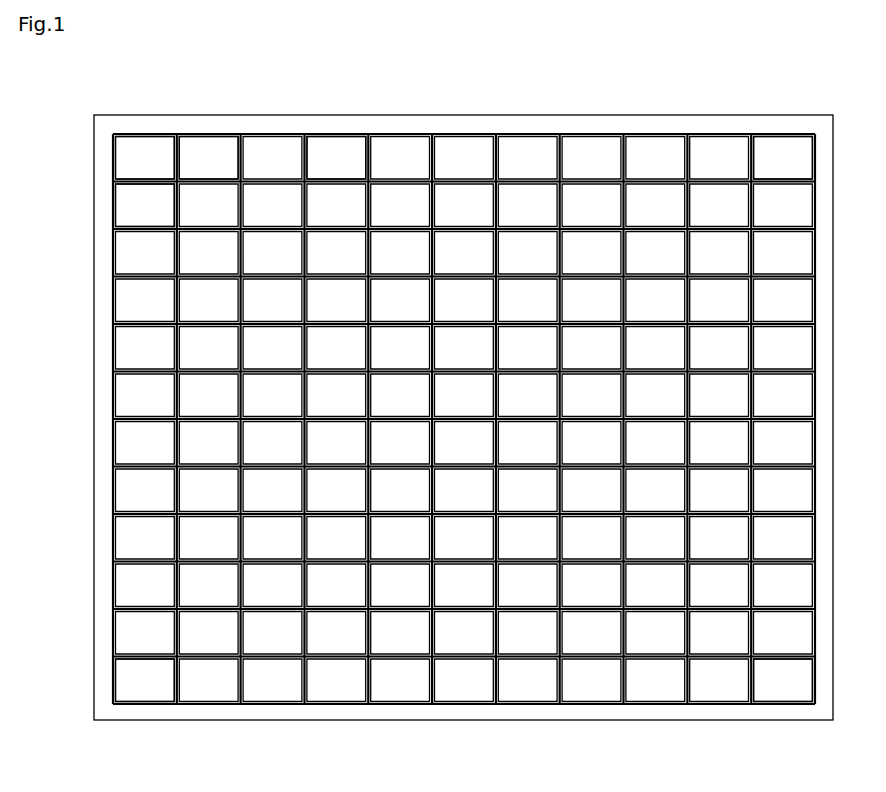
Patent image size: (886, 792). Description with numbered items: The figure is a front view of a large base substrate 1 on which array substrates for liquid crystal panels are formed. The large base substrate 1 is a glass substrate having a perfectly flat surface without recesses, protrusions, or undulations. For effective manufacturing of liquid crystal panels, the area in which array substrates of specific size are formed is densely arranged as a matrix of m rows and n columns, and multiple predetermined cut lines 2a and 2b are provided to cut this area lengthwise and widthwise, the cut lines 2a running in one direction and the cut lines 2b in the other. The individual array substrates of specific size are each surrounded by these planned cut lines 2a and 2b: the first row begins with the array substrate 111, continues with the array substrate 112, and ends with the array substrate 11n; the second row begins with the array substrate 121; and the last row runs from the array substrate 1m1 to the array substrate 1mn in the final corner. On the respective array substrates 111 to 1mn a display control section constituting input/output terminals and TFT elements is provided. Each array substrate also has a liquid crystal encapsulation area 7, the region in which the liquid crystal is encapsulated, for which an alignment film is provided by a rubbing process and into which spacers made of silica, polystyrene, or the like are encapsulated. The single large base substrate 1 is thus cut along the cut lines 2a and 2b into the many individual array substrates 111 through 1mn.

The large base substrate 1 is at (526, 111).
The liquid crystal encapsulation area 7 is at (348, 147).
The array substrate 111 is at (148, 132).
The array substrate 112 is at (206, 132).
The array substrate 11n is at (783, 135).
The array substrate 121 is at (118, 200).
The array substrate 1m1 is at (115, 680).
The array substrate 1mn is at (781, 700).
The predetermined cut line 2a is at (178, 382).
The predetermined cut line 2b is at (118, 462).